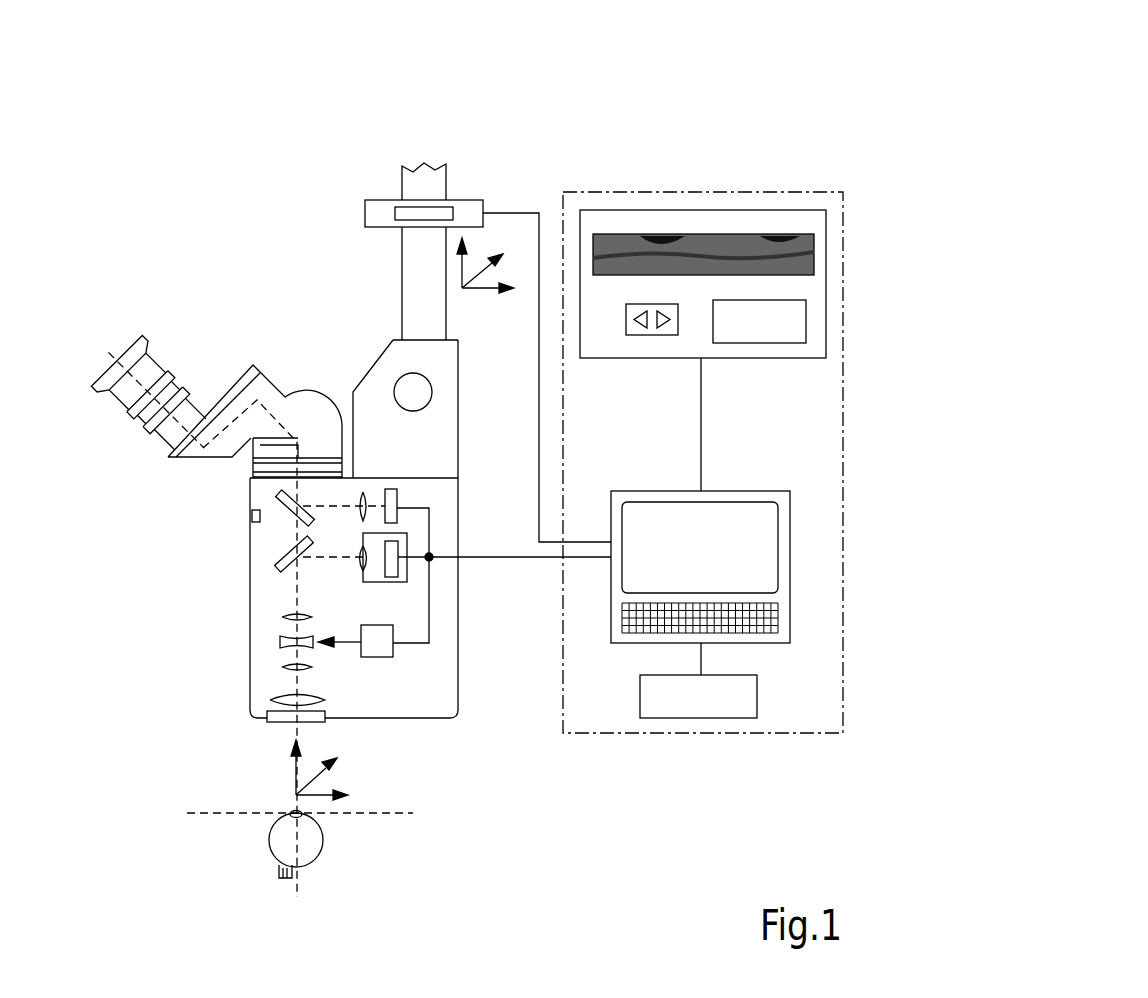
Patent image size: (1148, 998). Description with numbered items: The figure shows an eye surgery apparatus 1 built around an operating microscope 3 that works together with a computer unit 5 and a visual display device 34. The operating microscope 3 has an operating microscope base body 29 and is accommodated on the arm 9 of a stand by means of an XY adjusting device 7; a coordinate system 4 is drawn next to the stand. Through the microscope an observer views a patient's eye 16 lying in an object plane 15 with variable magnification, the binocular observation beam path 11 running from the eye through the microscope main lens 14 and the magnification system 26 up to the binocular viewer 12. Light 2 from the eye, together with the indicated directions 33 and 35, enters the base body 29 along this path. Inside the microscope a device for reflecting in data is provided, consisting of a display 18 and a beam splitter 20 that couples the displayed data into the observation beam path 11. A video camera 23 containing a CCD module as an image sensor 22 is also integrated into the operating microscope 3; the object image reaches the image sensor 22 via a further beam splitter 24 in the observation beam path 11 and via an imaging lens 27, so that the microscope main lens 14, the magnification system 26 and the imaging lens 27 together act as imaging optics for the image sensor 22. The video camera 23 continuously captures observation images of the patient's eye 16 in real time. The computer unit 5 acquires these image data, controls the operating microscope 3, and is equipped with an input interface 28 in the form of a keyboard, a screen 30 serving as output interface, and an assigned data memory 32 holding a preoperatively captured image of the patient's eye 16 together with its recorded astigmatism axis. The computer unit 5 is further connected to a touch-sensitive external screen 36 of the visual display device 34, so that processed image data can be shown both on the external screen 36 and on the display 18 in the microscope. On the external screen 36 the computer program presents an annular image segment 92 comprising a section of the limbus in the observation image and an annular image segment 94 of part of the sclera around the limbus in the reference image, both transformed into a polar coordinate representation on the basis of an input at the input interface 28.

The eye surgery apparatus 1 is at (736, 51).
The illumination light / light beam 2 is at (296, 775).
The operating microscope 3 is at (160, 610).
The coordinate system of camera 4 is at (482, 290).
The computer unit 5 is at (790, 567).
The XY adjusting device 7 is at (365, 213).
The arm 9 is at (412, 182).
The binocular observation beam path 11 is at (297, 592).
The binocular viewer 12 is at (140, 345).
The microscope main lens 14 is at (267, 716).
The object plane 15 is at (200, 812).
The patient's eye 16 is at (312, 842).
The display 18 is at (397, 493).
The beam splitter 20 is at (280, 503).
The image sensor 22 is at (398, 550).
The video camera 23 is at (407, 570).
The beam splitter 24 is at (282, 560).
The magnification system 26 is at (286, 666).
The imaging lens 27 is at (366, 565).
The input interface 28 is at (640, 622).
The operating microscope base body 29 is at (458, 682).
The screen 30 is at (732, 518).
The data memory 32 is at (757, 698).
The reflected light 33 is at (335, 765).
The visual display device 34 is at (735, 192).
The scattered light 35 is at (345, 792).
The touch-sensitive external screen 36 is at (778, 210).
The annular image segment 92 is at (814, 266).
The annular image segment 94 is at (814, 246).